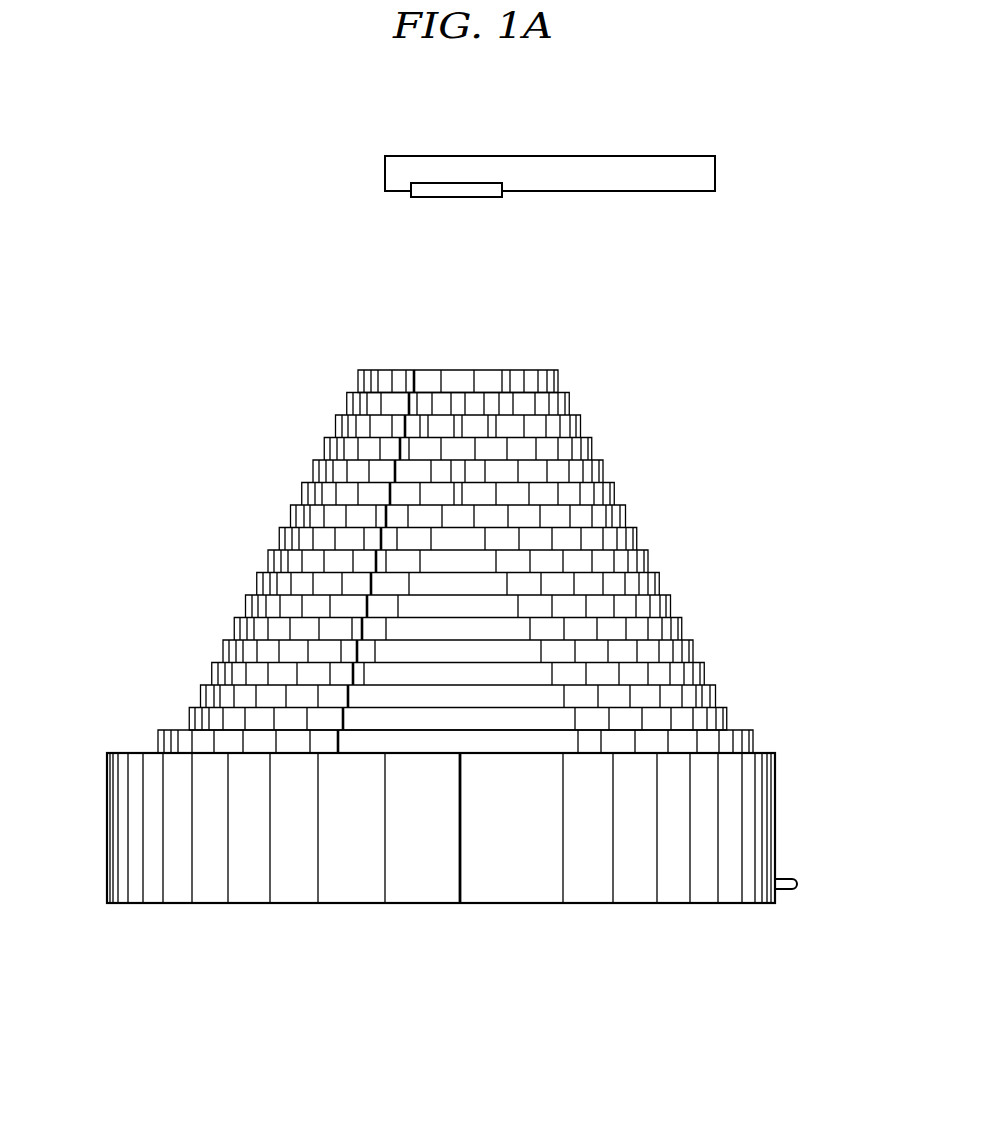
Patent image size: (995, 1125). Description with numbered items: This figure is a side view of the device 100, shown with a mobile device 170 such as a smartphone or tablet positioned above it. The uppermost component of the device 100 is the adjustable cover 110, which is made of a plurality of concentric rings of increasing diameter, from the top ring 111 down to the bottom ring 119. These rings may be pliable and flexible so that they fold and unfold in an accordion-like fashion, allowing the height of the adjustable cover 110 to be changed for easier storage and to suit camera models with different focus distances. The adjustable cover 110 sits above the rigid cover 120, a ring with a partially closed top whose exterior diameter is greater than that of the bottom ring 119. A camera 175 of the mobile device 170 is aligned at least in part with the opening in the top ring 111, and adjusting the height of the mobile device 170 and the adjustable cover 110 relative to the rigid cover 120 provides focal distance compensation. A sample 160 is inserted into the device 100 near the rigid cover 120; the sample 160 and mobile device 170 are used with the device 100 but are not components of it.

The device 100 is at (478, 330).
The adjustable cover 110 is at (407, 544).
The top ring 111 is at (530, 370).
The bottom ring 119 is at (755, 739).
The rigid cover 120 is at (107, 817).
The sample 160 is at (795, 880).
The mobile device 170 is at (385, 171).
The camera 175 is at (440, 193).